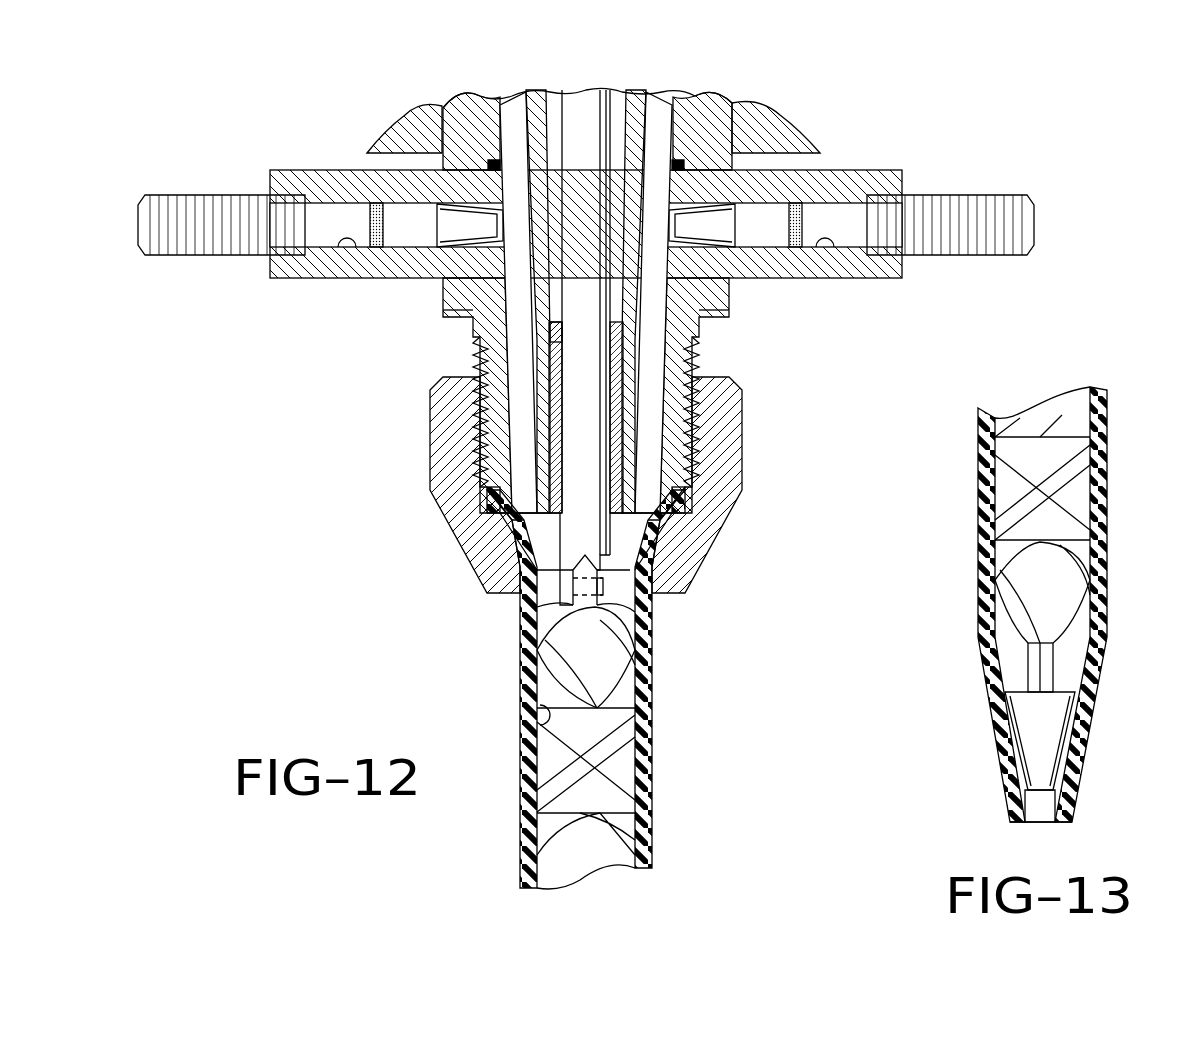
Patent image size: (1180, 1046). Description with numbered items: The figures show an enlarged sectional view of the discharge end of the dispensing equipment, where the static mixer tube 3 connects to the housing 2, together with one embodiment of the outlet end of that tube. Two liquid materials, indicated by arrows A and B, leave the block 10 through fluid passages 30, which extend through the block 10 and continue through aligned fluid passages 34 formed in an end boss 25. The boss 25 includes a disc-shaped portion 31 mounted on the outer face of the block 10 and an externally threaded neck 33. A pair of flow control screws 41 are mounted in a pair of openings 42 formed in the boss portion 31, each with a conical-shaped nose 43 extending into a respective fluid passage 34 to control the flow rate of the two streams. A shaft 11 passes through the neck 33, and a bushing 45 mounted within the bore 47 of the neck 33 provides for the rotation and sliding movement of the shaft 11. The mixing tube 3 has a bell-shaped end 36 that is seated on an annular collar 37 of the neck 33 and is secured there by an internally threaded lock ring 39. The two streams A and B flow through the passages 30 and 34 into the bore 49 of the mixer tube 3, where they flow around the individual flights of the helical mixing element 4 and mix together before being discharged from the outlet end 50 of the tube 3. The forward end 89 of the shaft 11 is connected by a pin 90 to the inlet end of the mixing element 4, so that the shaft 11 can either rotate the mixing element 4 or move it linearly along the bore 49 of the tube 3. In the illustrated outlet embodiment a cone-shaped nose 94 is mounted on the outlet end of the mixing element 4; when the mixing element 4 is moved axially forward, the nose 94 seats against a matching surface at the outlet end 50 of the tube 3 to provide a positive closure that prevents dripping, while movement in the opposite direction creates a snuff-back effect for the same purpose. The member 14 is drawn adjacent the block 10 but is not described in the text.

In FIG. 12, the housing 2 is at (446, 104).
In FIG. 12, the mixer tube 3 is at (652, 676).
In FIG. 13, the mixer tube 3 is at (1107, 502).
In FIG. 12, the mixing element 4 is at (612, 790).
In FIG. 13, the mixing element 4 is at (1065, 600).
In FIG. 12, the block 10 is at (717, 110).
In FIG. 12, the shaft 11 is at (583, 100).
In FIG. 12, the mounting wedge 14 is at (380, 146).
In FIG. 12, the end boss 25 is at (318, 282).
In FIG. 12, the fluid passage 30 is at (512, 104).
In FIG. 12, the disc-shaped portion 31 is at (880, 170).
In FIG. 12, the externally threaded neck 33 is at (693, 410).
In FIG. 12, the fluid passage 34 is at (518, 276).
In FIG. 12, the bell-shaped end 36 is at (667, 548).
In FIG. 12, the annular collar 37 is at (664, 500).
In FIG. 12, the lock ring 39 is at (735, 442).
In FIG. 12, the flow control screw 41 is at (208, 195).
In FIG. 12, the opening 42 is at (347, 250).
In FIG. 12, the conical-shaped nose 43 is at (475, 220).
In FIG. 12, the bushing 45 is at (616, 350).
In FIG. 12, the bore 47 is at (556, 293).
In FIG. 12, the bore 49 is at (538, 716).
In FIG. 13, the outlet end 50 is at (1043, 823).
In FIG. 12, the forward end 89 is at (542, 610).
In FIG. 12, the pin 90 is at (603, 587).
In FIG. 13, the cone-shaped nose 94 is at (1025, 737).
In FIG. 12, the liquid material stream A is at (545, 552).
In FIG. 12, the liquid material stream B is at (624, 552).